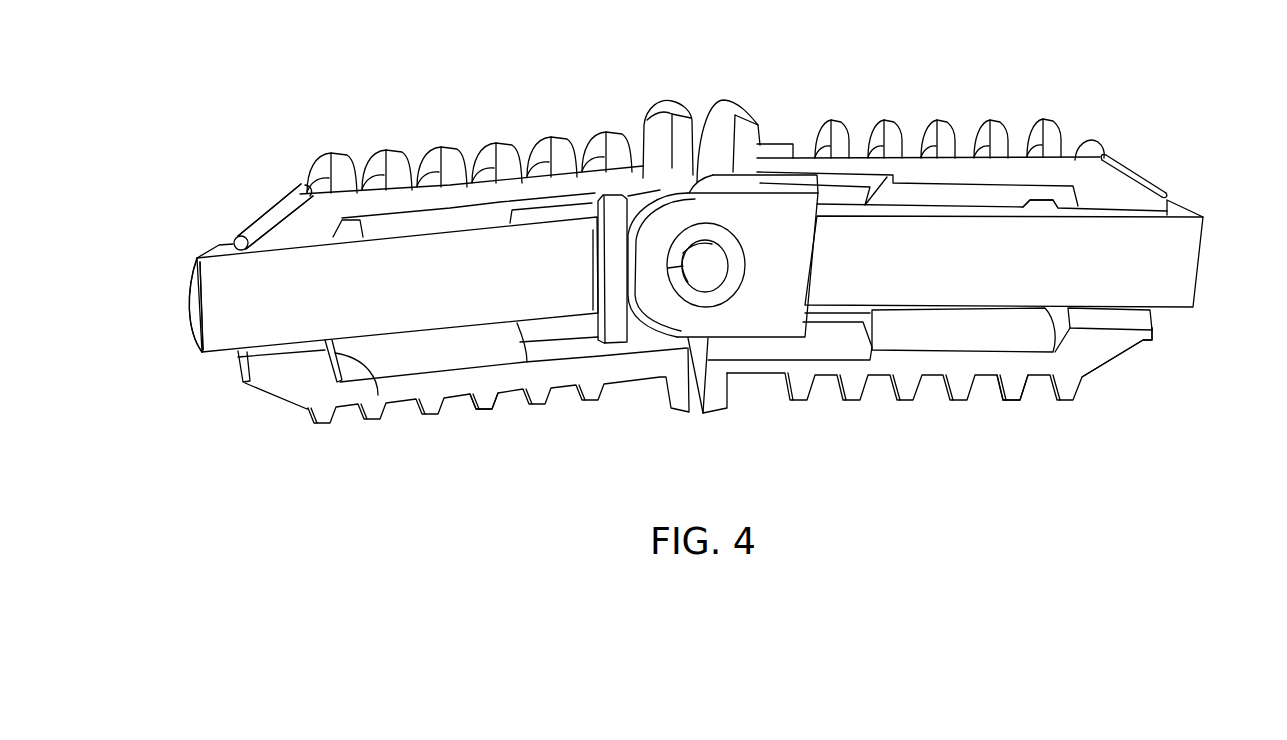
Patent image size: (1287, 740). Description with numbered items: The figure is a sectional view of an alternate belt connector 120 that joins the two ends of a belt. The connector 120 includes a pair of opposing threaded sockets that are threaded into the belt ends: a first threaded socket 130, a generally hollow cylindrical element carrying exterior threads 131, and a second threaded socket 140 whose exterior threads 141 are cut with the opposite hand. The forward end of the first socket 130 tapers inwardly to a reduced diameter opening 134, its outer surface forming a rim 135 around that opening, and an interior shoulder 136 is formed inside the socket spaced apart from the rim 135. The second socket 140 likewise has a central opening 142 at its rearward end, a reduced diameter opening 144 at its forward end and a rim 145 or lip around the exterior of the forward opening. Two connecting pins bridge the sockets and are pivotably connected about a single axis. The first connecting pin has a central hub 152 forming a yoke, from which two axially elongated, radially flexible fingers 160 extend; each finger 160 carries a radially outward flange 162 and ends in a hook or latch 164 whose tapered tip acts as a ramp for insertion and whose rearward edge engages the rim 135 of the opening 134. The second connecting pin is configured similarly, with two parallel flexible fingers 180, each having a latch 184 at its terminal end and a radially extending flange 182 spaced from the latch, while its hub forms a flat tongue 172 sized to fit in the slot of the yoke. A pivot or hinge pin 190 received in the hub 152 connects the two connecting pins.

The alternate belt connector 120 is at (264, 215).
The first threaded socket 130 is at (455, 405).
The exterior threads of the first threaded socket 131 is at (482, 410).
The reduced diameter opening 134 is at (275, 358).
The rim 135 is at (235, 363).
The interior shoulder 136 is at (335, 353).
The second threaded socket 140 is at (983, 377).
The threads of the second threaded socket 141 is at (1013, 398).
The central opening 142 is at (733, 353).
The reduced diameter opening 144 is at (1150, 316).
The rim 145 is at (1155, 335).
The central hub 152 is at (612, 342).
The fingers 160 is at (462, 291).
The flange 162 is at (353, 236).
The latch 164 is at (210, 252).
The flat tongue 172 is at (765, 332).
The fingers 180 is at (985, 266).
The flange 182 is at (1042, 200).
The latch 184 is at (1182, 202).
The hinge pin 190 is at (727, 233).